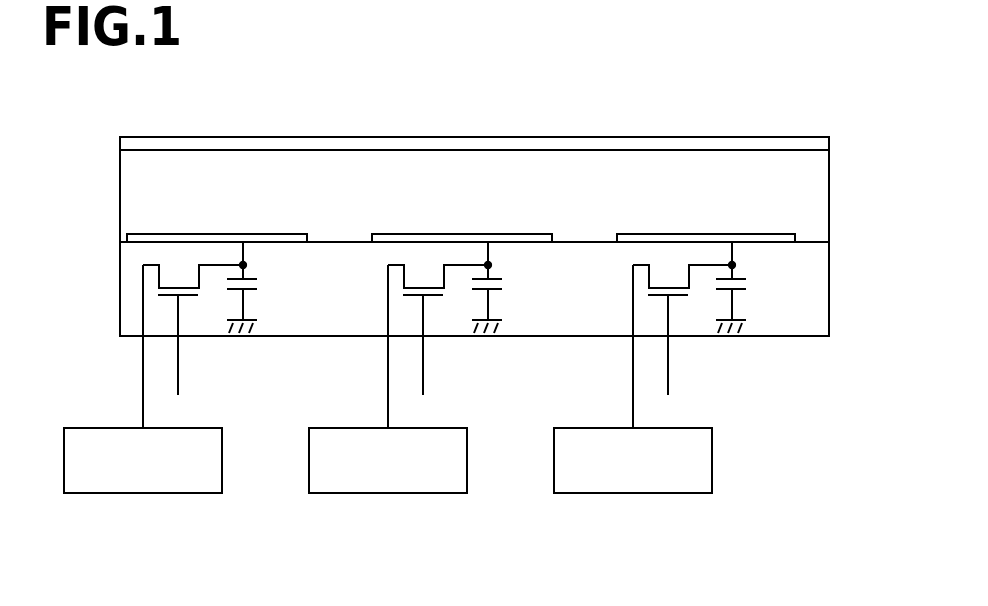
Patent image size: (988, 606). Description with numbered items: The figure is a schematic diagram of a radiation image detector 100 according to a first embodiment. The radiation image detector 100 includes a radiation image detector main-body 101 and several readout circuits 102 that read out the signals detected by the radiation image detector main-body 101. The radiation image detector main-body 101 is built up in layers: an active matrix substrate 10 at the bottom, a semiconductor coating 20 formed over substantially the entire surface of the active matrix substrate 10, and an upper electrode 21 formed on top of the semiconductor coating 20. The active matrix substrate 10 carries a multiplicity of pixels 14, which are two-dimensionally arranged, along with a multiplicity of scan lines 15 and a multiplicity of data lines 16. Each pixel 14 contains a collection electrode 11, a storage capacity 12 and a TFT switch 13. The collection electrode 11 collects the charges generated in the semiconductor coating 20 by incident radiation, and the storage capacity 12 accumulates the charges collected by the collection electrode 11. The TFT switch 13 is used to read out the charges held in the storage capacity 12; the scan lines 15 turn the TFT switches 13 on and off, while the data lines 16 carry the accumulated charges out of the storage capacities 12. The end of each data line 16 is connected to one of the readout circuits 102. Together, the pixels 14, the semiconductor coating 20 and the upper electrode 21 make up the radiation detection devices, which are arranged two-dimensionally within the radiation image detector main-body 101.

The radiation image detector 100 is at (783, 68).
The radiation image detector main-body 101 is at (810, 137).
The upper electrode 21 is at (826, 145).
The semiconductor coating 20 is at (826, 221).
The active matrix substrate 10 is at (840, 243).
The collection electrode 11 is at (280, 240).
The pixel 14 is at (232, 224).
The storage capacity 12 is at (259, 285).
The TFT switch 13 is at (193, 299).
The scan line 15 is at (178, 387).
The data line 16 is at (142, 355).
The readout circuit 102 is at (143, 493).